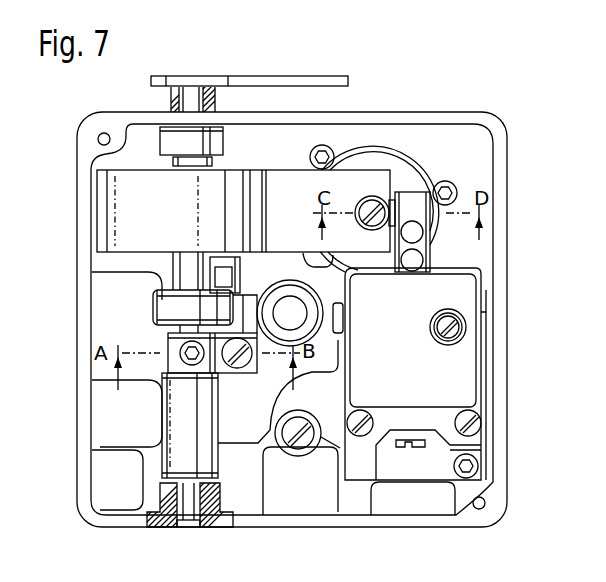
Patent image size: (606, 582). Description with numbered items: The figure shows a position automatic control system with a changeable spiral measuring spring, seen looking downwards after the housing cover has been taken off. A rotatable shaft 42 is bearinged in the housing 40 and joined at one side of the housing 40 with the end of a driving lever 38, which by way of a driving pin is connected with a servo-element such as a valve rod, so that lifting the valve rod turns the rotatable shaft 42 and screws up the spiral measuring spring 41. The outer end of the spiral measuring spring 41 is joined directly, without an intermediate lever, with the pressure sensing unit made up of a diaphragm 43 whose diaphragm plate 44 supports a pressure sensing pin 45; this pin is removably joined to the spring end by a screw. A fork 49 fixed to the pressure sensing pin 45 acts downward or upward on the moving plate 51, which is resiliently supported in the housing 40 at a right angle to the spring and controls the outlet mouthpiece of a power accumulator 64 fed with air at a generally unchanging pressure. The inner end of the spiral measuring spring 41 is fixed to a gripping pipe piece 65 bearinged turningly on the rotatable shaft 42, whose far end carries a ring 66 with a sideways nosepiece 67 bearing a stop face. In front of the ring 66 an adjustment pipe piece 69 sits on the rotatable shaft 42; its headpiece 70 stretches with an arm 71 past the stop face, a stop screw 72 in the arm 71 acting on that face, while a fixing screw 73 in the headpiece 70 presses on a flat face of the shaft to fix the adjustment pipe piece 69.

The driving lever 38 is at (288, 77).
The housing 40 is at (435, 121).
The spiral measuring spring 41 is at (125, 200).
The rotatable shaft 42 is at (188, 100).
The diaphragm 43 is at (411, 174).
The diaphragm plate 44 is at (411, 174).
The pressure sensing pin 45 is at (373, 196).
The fork 49 is at (386, 226).
The moving plate 51 is at (426, 243).
The power accumulator 64 is at (450, 380).
The gripping pipe piece 65 is at (183, 262).
The ring 66 is at (170, 305).
The nosepiece 67 is at (240, 313).
The adjustment pipe piece 69 is at (175, 455).
The headpiece 70 is at (172, 392).
The arm 71 is at (238, 376).
The stop screw 72 is at (217, 374).
The fixing screw 73 is at (177, 346).